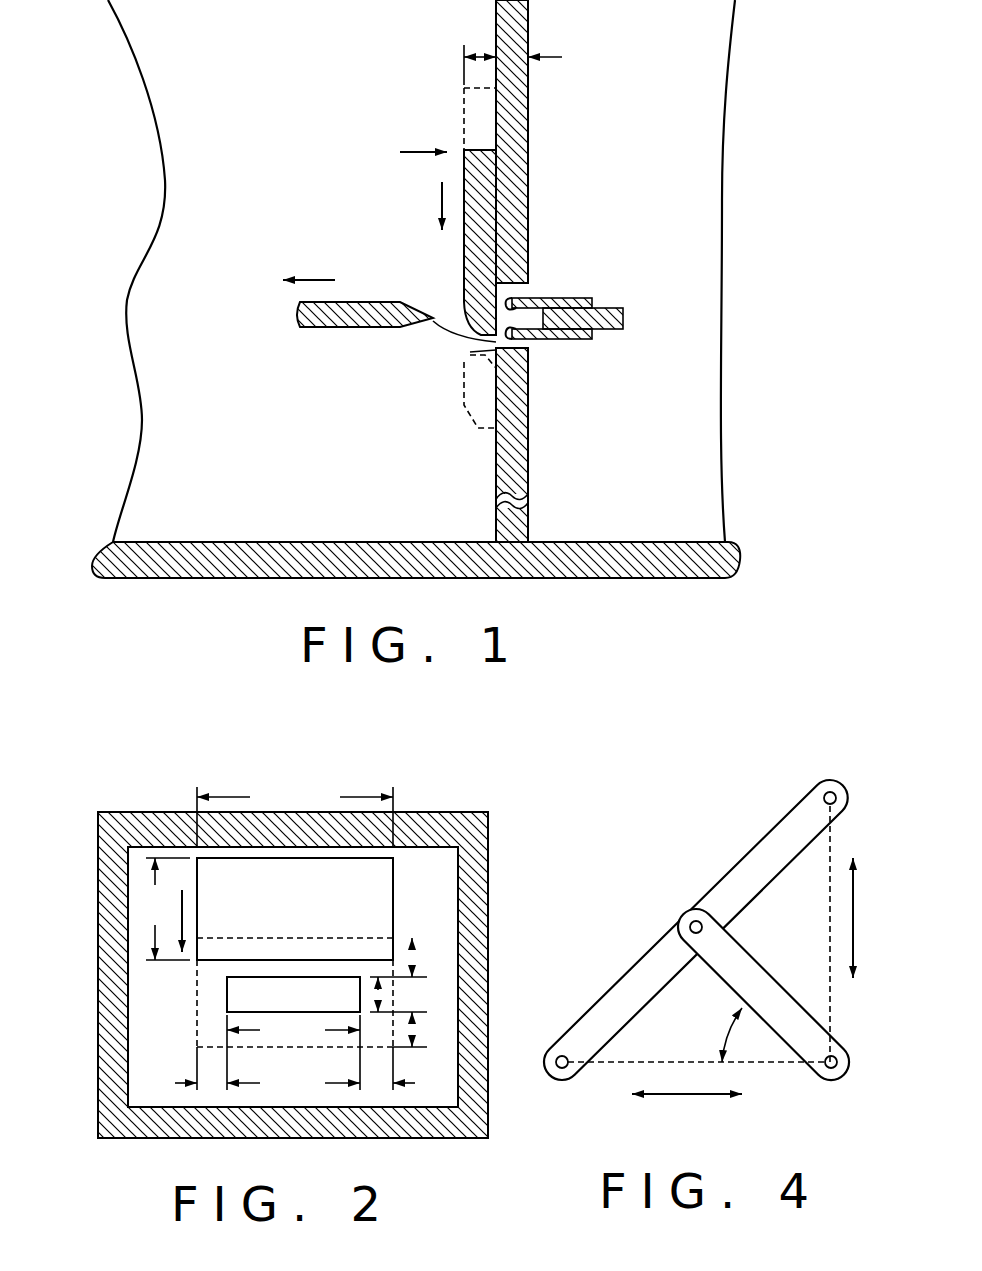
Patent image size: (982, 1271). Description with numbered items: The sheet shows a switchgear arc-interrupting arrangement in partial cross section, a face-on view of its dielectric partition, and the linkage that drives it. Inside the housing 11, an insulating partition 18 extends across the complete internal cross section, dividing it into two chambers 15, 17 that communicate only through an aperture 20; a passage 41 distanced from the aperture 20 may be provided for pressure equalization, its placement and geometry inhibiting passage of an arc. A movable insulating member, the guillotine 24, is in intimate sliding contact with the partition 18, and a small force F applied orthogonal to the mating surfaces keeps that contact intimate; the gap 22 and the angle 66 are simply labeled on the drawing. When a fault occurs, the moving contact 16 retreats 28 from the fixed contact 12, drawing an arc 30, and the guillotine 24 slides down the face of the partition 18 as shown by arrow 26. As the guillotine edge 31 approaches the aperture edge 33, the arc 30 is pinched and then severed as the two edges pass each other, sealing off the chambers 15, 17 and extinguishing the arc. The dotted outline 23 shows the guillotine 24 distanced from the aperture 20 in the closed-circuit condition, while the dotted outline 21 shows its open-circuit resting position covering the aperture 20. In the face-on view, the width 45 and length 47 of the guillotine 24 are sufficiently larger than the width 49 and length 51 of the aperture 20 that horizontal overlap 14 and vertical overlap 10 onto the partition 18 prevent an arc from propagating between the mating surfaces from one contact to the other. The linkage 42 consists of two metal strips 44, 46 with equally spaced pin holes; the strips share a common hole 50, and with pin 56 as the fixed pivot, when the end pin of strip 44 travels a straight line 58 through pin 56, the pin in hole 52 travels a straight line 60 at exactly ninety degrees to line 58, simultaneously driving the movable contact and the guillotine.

In FIG. 2, the vertical overlap 10 is at (412, 948).
In FIG. 1, the housing 11 is at (291, 0).
In FIG. 2, the housing 11 is at (488, 880).
In FIG. 1, the fixed contact 12 is at (606, 308).
In FIG. 2, the horizontal overlap 14 is at (178, 1083).
In FIG. 1, the chamber 15 is at (610, 446).
In FIG. 1, the moving contact 16 is at (338, 330).
In FIG. 1, the chamber 17 is at (234, 473).
In FIG. 1, the insulating partition 18 is at (528, 142).
In FIG. 2, the insulating partition 18 is at (153, 982).
In FIG. 1, the aperture 20 is at (522, 290).
In FIG. 2, the aperture 20 is at (280, 1008).
In FIG. 1, the dotted outline 21 is at (462, 415).
In FIG. 2, the dotted outline 21 is at (207, 1015).
In FIG. 1, the gap width 22 is at (478, 45).
In FIG. 1, the dotted outline 23 is at (462, 113).
In FIG. 1, the guillotine 24 is at (463, 160).
In FIG. 2, the guillotine 24 is at (370, 892).
In FIG. 1, the arrow 26 is at (440, 200).
In FIG. 2, the arrow 26 is at (182, 904).
In FIG. 4, the arrow 26 is at (855, 897).
In FIG. 1, the retreating movement 28 is at (323, 280).
In FIG. 4, the retreating movement 28 is at (667, 1094).
In FIG. 1, the arc 30 is at (440, 334).
In FIG. 1, the guillotine edge 31 is at (488, 306).
In FIG. 1, the aperture edge 33 is at (470, 352).
In FIG. 1, the passage 41 is at (528, 506).
In FIG. 4, the linkage 42 is at (712, 934).
In FIG. 4, the metal strip 44 is at (636, 962).
In FIG. 2, the guillotine width 45 is at (358, 797).
In FIG. 4, the metal strip 46 is at (774, 975).
In FIG. 2, the guillotine length 47 is at (155, 885).
In FIG. 2, the aperture width 49 is at (330, 1083).
In FIG. 4, the pin hole 50 is at (698, 920).
In FIG. 2, the aperture length 51 is at (385, 995).
In FIG. 4, the pin hole 52 is at (824, 798).
In FIG. 4, the pin 56 is at (845, 1060).
In FIG. 4, the straight line 58 is at (770, 1062).
In FIG. 4, the straight line 60 is at (832, 1000).
In FIG. 4, the angle of rotation 66 is at (726, 1026).
In FIG. 1, the force F is at (408, 150).